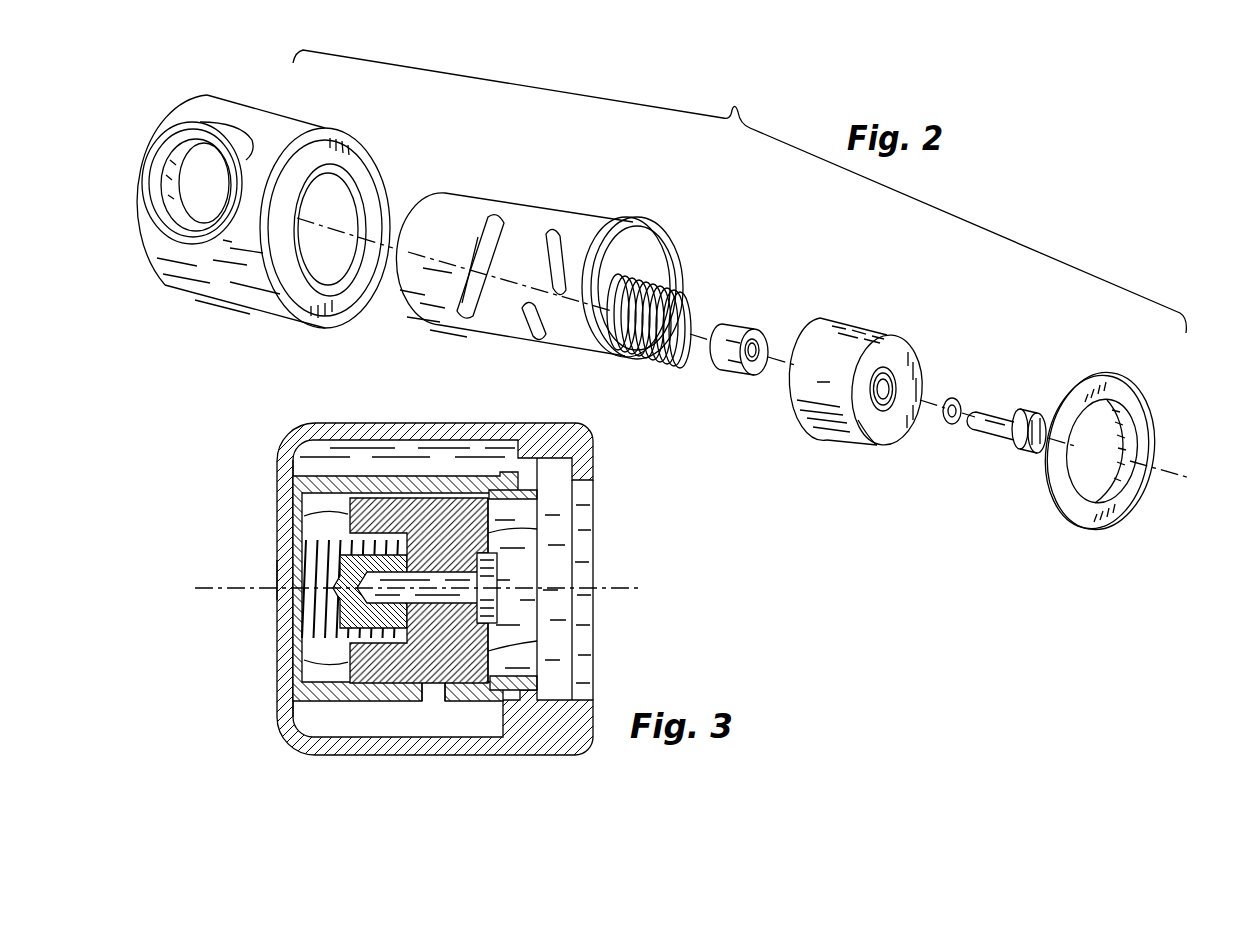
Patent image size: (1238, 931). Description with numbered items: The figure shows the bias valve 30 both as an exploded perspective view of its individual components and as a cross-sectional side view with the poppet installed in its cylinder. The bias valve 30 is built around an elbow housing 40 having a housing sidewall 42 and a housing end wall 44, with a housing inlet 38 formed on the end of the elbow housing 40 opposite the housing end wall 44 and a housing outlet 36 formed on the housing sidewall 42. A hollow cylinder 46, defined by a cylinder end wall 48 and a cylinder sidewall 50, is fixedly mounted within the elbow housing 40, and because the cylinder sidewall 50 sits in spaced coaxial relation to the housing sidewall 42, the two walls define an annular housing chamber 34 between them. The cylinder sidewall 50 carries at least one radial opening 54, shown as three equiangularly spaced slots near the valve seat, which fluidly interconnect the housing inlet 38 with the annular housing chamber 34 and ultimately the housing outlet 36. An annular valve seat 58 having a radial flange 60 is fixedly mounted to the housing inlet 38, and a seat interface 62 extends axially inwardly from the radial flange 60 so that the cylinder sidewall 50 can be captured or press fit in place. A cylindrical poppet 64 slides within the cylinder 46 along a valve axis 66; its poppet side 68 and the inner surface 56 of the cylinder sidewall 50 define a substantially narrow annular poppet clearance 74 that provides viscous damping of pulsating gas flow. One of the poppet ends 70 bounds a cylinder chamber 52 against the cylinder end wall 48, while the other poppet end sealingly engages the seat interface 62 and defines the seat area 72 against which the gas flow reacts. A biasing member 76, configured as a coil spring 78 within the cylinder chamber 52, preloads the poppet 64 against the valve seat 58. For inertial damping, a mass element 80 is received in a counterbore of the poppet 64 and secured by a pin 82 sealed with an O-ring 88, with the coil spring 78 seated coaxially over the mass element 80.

In FIG. 2, the bias valve 30 is at (739, 191).
In FIG. 3, the annular housing chamber 34 is at (308, 455).
In FIG. 2, the housing outlet 36 is at (192, 197).
In FIG. 2, the housing inlet 38 is at (340, 285).
In FIG. 3, the housing inlet 38 is at (585, 495).
In FIG. 2, the elbow housing 40 is at (257, 206).
In FIG. 3, the elbow housing 40 is at (432, 595).
In FIG. 2, the housing sidewall 42 is at (226, 294).
In FIG. 3, the housing sidewall 42 is at (428, 422).
In FIG. 3, the housing end wall 44 is at (282, 576).
In FIG. 2, the cylinder 46 is at (539, 258).
In FIG. 3, the cylinder 46 is at (379, 601).
In FIG. 3, the cylinder end wall 48 is at (300, 503).
In FIG. 2, the cylinder sidewall 50 is at (458, 198).
In FIG. 3, the cylinder sidewall 50 is at (337, 702).
In FIG. 3, the cylinder chamber 52 is at (323, 667).
In FIG. 2, the radial opening 54 is at (491, 220).
In FIG. 3, the radial opening 54 is at (482, 713).
In FIG. 2, the inner surface 56 is at (552, 237).
In FIG. 3, the inner surface 56 is at (487, 490).
In FIG. 2, the valve seat 58 is at (1111, 438).
In FIG. 3, the valve seat 58 is at (564, 633).
In FIG. 2, the radial flange 60 is at (1145, 408).
In FIG. 3, the radial flange 60 is at (572, 747).
In FIG. 2, the seat interface 62 is at (1113, 487).
In FIG. 3, the seat interface 62 is at (490, 653).
In FIG. 2, the poppet 64 is at (857, 376).
In FIG. 3, the poppet 64 is at (432, 653).
In FIG. 2, the valve axis 66 is at (1160, 468).
In FIG. 3, the valve axis 66 is at (616, 588).
In FIG. 2, the poppet side 68 is at (823, 326).
In FIG. 3, the poppet side 68 is at (468, 688).
In FIG. 2, the poppet ends 70 is at (880, 434).
In FIG. 3, the poppet ends 70 is at (330, 520).
In FIG. 2, the seat area 72 is at (893, 343).
In FIG. 3, the poppet clearance 74 is at (390, 703).
In FIG. 2, the biasing member 76 is at (660, 298).
In FIG. 3, the biasing member 76 is at (291, 598).
In FIG. 2, the coil spring 78 is at (654, 282).
In FIG. 3, the coil spring 78 is at (306, 652).
In FIG. 2, the mass element 80 is at (743, 316).
In FIG. 3, the mass element 80 is at (337, 604).
In FIG. 2, the pin 82 is at (994, 434).
In FIG. 3, the pin 82 is at (368, 574).
In FIG. 2, the O-ring 88 is at (946, 424).